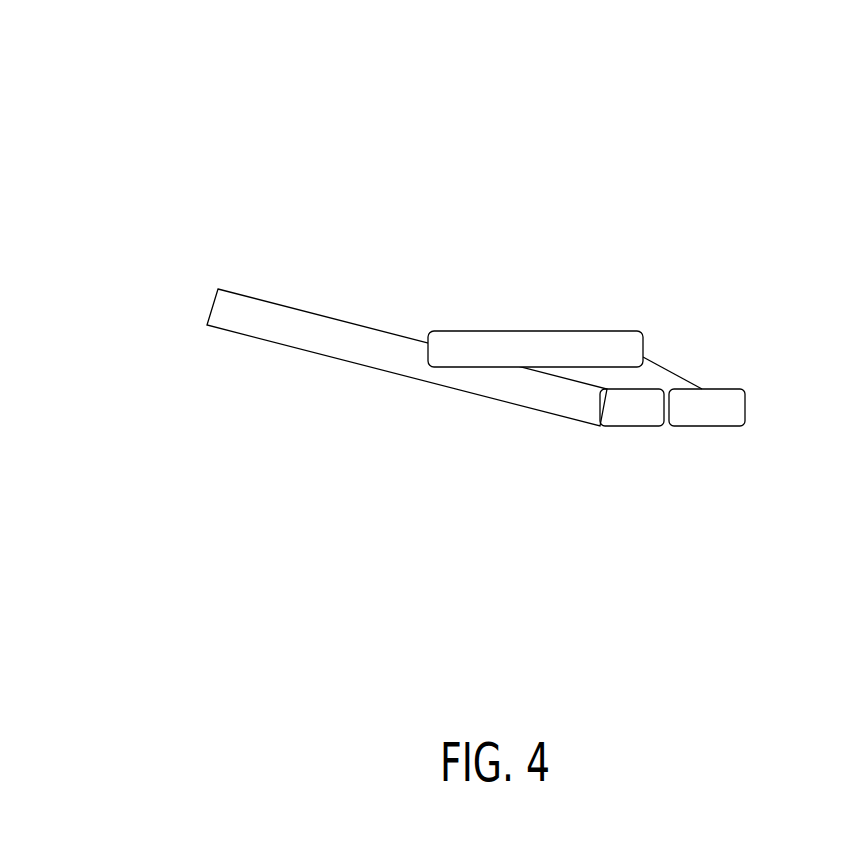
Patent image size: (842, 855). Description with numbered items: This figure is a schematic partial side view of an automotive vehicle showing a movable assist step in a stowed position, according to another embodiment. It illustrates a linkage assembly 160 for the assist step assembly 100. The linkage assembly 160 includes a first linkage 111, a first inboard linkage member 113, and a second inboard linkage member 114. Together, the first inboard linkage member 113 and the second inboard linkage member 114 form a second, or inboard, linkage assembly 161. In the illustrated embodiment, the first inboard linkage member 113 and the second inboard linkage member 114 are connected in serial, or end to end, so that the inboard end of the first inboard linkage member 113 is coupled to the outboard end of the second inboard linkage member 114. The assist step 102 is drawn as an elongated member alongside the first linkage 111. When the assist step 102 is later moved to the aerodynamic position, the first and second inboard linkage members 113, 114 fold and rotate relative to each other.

The assist step assembly 100 is at (242, 140).
The assist step 102 is at (333, 335).
The first linkage 111 is at (515, 332).
The first inboard linkage member 113 is at (635, 407).
The second inboard linkage member 114 is at (700, 407).
The linkage assembly 160 is at (578, 442).
The inboard linkage assembly 161 is at (720, 363).